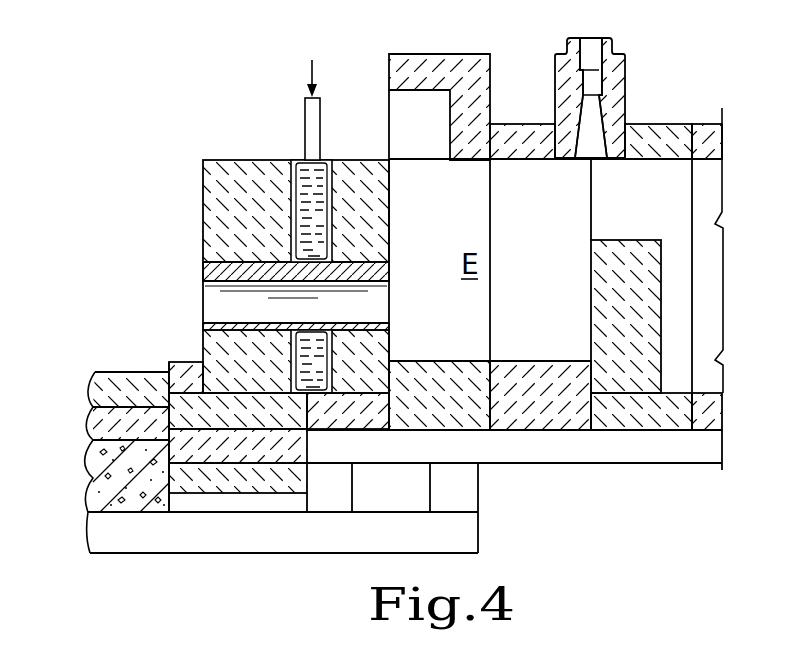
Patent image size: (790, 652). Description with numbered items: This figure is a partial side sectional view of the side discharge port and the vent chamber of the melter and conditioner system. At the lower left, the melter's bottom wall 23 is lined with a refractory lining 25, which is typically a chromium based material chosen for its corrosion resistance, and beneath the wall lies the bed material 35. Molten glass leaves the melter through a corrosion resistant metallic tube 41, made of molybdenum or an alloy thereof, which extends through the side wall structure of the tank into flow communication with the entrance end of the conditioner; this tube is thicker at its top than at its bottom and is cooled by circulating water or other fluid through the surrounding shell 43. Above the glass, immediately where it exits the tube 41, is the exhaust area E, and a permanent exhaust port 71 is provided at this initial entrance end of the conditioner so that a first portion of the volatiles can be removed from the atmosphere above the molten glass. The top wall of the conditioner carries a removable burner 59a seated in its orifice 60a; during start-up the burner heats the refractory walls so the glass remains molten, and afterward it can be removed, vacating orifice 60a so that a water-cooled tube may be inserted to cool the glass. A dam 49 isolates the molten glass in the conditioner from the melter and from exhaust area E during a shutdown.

The permanent exhaust port 71 is at (397, 104).
The removable burner 59a is at (613, 52).
The orifice 60a is at (556, 150).
The dam 49 is at (623, 240).
The shell 43 is at (291, 202).
The corrosion resistant metallic tube 41 is at (203, 272).
The refractory lining 25 is at (92, 394).
The bottom wall 23 is at (92, 427).
The bed material 35 is at (92, 480).